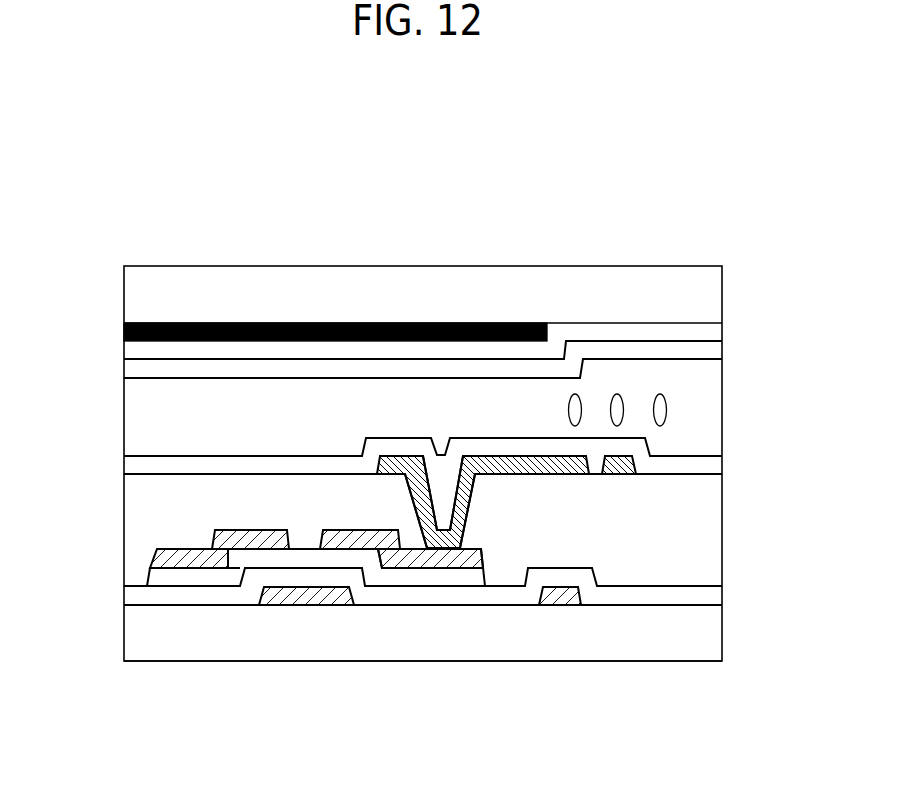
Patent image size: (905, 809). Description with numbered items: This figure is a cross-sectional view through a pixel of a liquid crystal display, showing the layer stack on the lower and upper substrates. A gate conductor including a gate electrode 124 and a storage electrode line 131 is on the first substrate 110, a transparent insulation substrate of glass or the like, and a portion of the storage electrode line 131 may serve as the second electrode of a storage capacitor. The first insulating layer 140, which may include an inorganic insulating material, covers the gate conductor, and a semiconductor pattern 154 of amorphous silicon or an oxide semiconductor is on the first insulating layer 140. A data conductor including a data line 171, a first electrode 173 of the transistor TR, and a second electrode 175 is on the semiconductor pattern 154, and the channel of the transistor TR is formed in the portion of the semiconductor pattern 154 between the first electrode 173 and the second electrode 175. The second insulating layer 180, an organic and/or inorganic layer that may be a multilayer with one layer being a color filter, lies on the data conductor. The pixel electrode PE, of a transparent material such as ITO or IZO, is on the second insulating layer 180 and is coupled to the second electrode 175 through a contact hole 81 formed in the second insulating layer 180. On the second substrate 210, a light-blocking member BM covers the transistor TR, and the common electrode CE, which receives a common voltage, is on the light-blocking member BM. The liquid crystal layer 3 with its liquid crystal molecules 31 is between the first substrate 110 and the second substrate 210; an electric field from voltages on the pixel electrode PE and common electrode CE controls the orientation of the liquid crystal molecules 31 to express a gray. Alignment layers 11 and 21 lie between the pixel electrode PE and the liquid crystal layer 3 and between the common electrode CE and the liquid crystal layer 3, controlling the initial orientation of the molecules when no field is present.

The second substrate 210 is at (712, 295).
The light-blocking member BM is at (124, 329).
The common electrode CE is at (712, 331).
The alignment layer 21 is at (712, 352).
The liquid crystal molecules 31 is at (667, 410).
The liquid crystal layer 3 is at (712, 430).
The alignment layer 11 is at (712, 467).
The pixel electrode PE is at (506, 382).
The contact hole 81 is at (432, 373).
The second insulating layer 180 is at (712, 529).
The first insulating layer 140 is at (712, 598).
The first substrate 110 is at (712, 633).
The semiconductor pattern 154 is at (316, 639).
The data line 171 is at (189, 639).
The first electrode 173 is at (250, 629).
The second electrode 175 is at (401, 629).
The gate electrode 124 is at (306, 658).
The storage electrode line 131 is at (560, 658).
The transistor TR is at (341, 678).